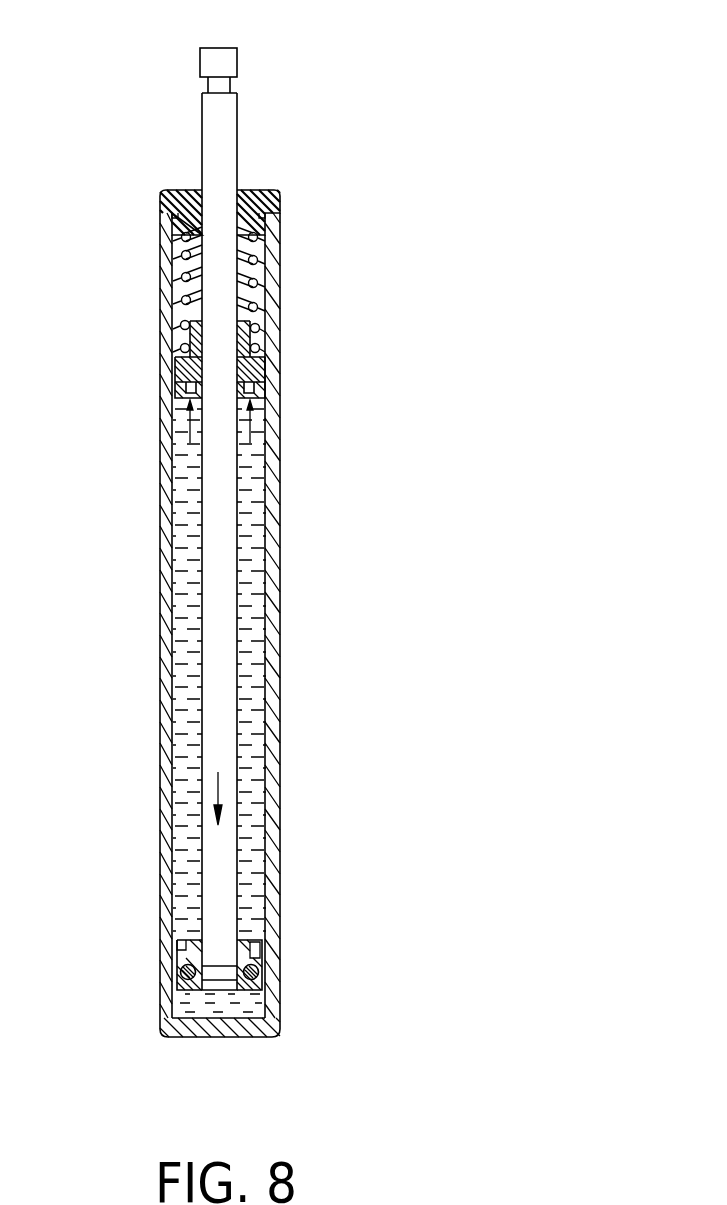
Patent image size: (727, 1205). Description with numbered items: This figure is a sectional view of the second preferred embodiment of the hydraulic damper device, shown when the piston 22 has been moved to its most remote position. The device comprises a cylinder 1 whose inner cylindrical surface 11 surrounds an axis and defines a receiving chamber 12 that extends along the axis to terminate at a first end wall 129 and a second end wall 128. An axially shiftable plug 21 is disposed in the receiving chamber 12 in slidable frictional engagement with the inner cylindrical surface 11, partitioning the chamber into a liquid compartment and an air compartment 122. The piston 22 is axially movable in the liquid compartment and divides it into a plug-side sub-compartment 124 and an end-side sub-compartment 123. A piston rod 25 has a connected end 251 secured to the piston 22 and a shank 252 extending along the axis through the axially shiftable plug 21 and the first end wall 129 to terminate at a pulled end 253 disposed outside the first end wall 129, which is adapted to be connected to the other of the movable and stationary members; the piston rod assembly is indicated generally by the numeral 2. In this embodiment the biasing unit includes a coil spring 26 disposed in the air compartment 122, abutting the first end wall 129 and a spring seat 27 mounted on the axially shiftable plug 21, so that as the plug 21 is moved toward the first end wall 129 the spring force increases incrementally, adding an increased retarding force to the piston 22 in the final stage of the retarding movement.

The cylinder 1 is at (148, 759).
The inner cylindrical surface 11 is at (162, 848).
The receiving chamber 12 is at (280, 548).
The piston rod assembly 2 is at (256, 110).
The axially shiftable plug 21 is at (185, 388).
The piston 22 is at (183, 950).
The piston rod 25 is at (222, 152).
The coil spring 26 is at (190, 276).
The spring seat 27 is at (187, 360).
The air compartment 122 is at (255, 270).
The end-side sub-compartment 123 is at (188, 1000).
The plug-side sub-compartment 124 is at (188, 607).
The second end wall 128 is at (221, 1020).
The first end wall 129 is at (272, 243).
The connected end 251 is at (222, 925).
The shank 252 is at (232, 660).
The pulled end 253 is at (227, 60).